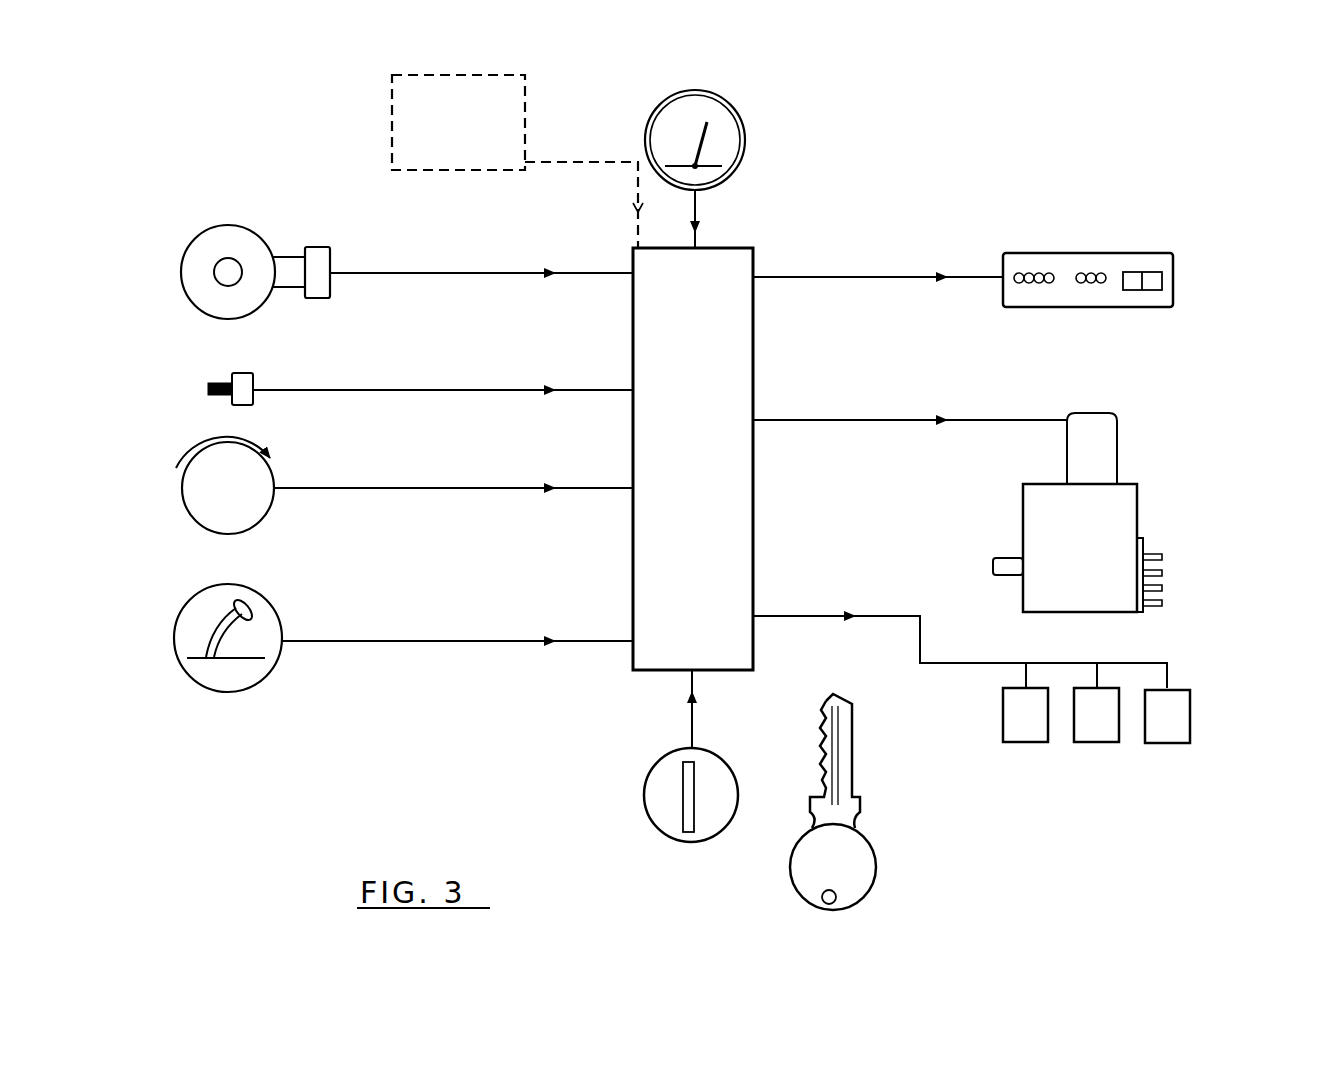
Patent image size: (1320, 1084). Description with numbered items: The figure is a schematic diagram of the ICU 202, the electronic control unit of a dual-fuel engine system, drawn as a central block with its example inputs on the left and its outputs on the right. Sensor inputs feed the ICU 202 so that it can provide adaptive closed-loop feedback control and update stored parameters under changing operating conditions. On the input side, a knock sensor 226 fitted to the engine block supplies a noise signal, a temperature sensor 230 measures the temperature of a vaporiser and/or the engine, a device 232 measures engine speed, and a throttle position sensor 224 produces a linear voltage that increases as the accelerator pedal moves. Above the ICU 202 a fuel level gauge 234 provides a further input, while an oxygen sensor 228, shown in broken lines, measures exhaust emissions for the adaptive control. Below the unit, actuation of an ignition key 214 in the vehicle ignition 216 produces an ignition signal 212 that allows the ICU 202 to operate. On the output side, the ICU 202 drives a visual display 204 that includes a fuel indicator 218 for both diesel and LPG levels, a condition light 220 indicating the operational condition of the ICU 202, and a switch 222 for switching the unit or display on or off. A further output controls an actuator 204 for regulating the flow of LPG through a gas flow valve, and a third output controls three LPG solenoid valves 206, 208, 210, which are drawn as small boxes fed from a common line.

The ICU 202 is at (957, 421).
The visual display / actuator 204 is at (1080, 560).
The LPG solenoid valve 206 is at (1016, 727).
The LPG solenoid valve 208 is at (1090, 728).
The LPG solenoid valve 210 is at (1172, 727).
The ignition signal 212 is at (692, 715).
The ignition key 214 is at (850, 867).
The vehicle ignition 216 is at (663, 795).
The fuel indicator 218 is at (1036, 274).
The condition light 220 is at (1093, 274).
The switch 222 is at (1152, 275).
The throttle position sensor 224 is at (198, 637).
The knock sensor 226 is at (198, 286).
The oxygen sensor 228 is at (392, 124).
The temperature sensor 230 is at (208, 392).
The device for measuring engine speed 232 is at (208, 492).
The fuel level gauge 234 is at (722, 131).